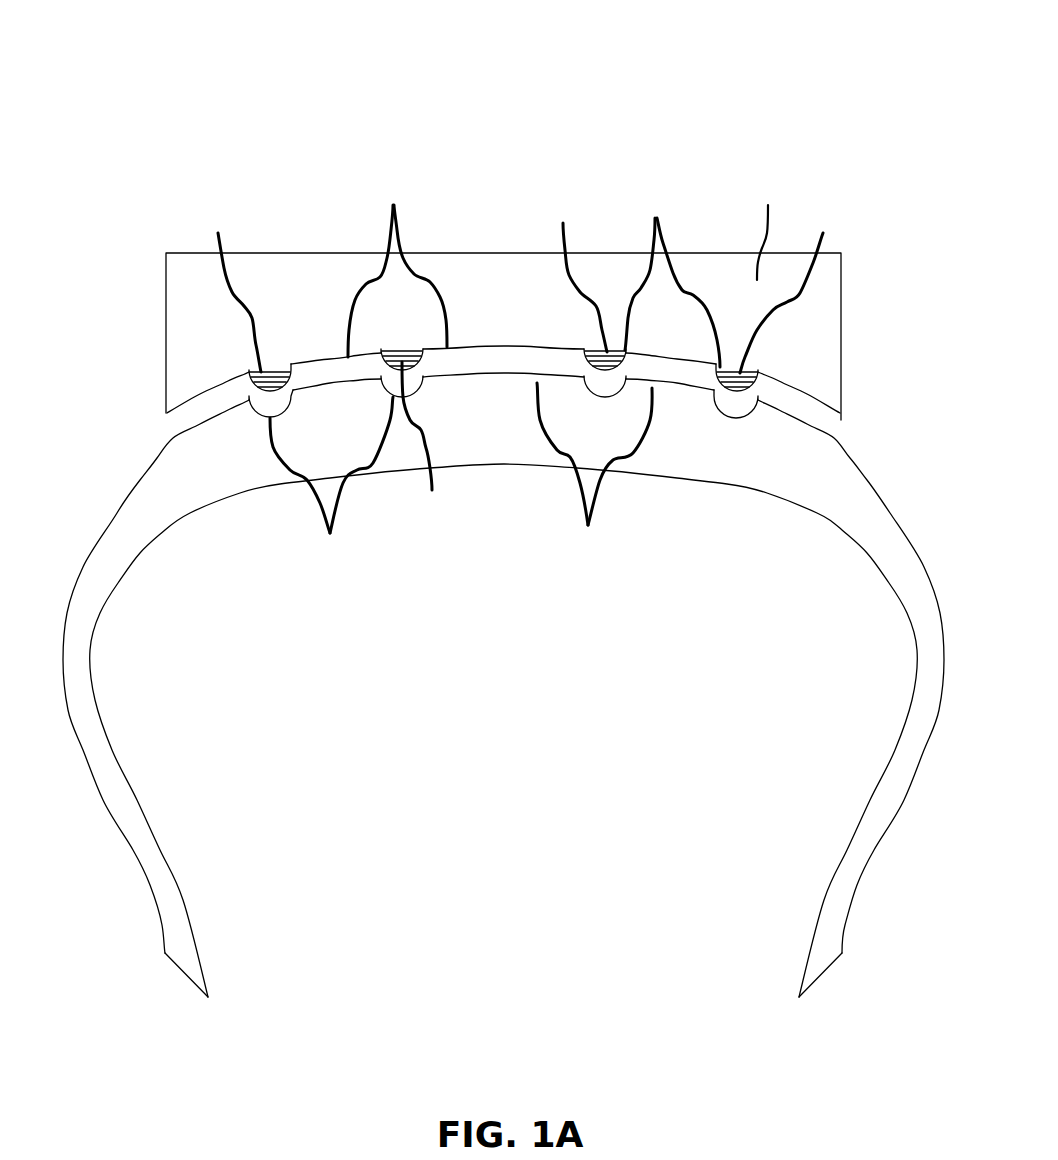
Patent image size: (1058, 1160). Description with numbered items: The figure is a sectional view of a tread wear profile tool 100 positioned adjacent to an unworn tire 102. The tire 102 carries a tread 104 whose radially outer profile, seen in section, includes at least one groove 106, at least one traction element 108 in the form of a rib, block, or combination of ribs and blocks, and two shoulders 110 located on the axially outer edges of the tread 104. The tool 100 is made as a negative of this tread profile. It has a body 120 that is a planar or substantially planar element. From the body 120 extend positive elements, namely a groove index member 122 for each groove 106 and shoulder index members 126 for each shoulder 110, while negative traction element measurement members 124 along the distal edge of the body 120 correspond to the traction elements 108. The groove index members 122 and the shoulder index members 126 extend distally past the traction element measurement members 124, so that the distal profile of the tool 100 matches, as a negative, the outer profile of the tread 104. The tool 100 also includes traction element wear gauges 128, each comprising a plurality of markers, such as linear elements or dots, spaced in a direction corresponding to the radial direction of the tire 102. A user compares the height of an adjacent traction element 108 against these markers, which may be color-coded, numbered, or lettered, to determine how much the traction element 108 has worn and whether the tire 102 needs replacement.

The tread wear profile tool 100 is at (207, 128).
The tire 102 is at (757, 483).
The tread 104 is at (498, 292).
The groove 106 is at (331, 481).
The traction element 108 is at (594, 470).
The shoulder 110 is at (157, 458).
The body 120 is at (770, 227).
The groove index member 122 is at (672, 279).
The traction element measurement member 124 is at (397, 266).
The shoulder index member 126 is at (165, 413).
The traction element wear gauge 128 is at (520, 360).